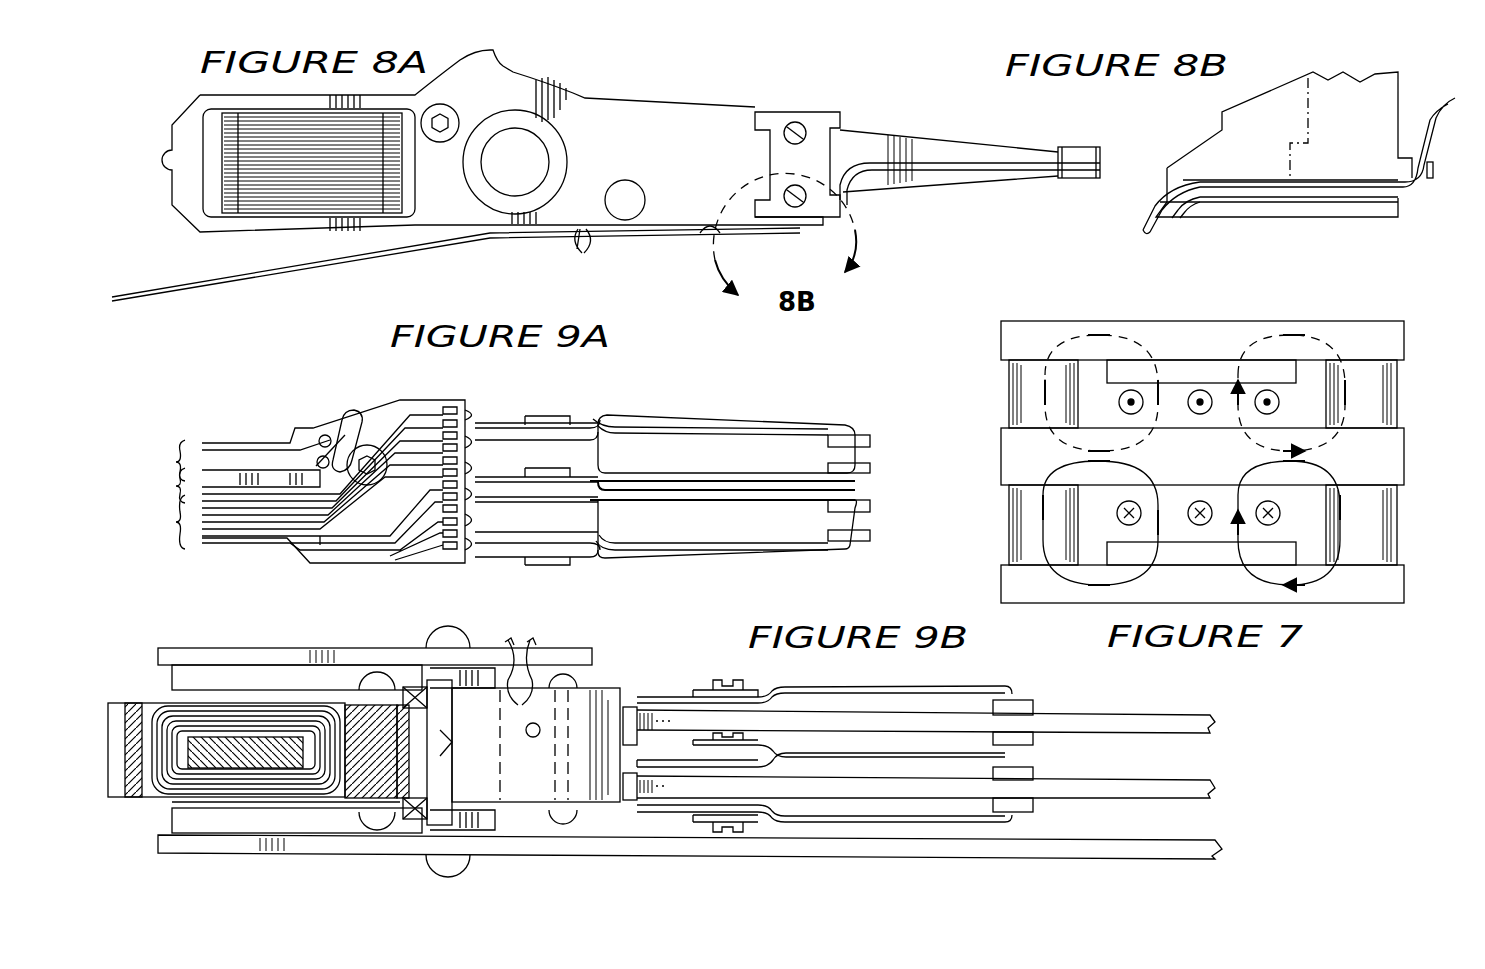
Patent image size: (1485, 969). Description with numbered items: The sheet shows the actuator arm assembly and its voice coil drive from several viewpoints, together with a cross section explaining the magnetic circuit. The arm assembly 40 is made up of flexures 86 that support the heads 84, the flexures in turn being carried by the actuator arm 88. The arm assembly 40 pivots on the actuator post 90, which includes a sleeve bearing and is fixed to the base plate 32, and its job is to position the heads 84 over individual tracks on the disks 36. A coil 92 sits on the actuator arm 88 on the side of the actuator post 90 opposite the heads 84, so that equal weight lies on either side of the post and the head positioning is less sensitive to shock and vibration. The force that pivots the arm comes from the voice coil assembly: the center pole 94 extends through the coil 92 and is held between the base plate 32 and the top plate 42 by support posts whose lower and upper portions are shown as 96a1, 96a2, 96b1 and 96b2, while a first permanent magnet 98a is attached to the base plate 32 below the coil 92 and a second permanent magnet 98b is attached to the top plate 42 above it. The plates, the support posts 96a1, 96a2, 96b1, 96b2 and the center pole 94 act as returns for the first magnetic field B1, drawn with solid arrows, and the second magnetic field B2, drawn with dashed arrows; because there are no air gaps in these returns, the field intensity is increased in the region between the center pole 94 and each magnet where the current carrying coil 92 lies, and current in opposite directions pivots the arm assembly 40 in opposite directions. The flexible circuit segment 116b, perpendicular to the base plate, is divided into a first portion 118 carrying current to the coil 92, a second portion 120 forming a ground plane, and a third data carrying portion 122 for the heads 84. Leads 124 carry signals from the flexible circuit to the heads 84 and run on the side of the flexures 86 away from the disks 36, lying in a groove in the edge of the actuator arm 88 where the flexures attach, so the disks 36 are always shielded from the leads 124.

In FIG. 7, the base plate 32 is at (1408, 585).
In FIG. 9B, the base plate 32 is at (665, 855).
In FIG. 9B, the disks 36 is at (1100, 733).
In FIG. 8A, the arm assembly 40 is at (695, 168).
In FIG. 9B, the arm assembly 40 is at (608, 680).
In FIG. 7, the top plate 42 is at (1408, 350).
In FIG. 9B, the top plate 42 is at (345, 650).
In FIG. 8A, the heads 84 is at (1068, 180).
In FIG. 9A, the heads 84 is at (870, 441).
In FIG. 9B, the heads 84 is at (1035, 708).
In FIG. 8A, the flexures 86 is at (920, 180).
In FIG. 9A, the flexures 86 is at (777, 424).
In FIG. 9B, the flexures 86 is at (1005, 690).
In FIG. 8A, the actuator arm 88 is at (660, 112).
In FIG. 8B, the actuator arm 88 is at (1390, 100).
In FIG. 9B, the actuator arm 88 is at (600, 716).
In FIG. 8A, the actuator post 90 is at (528, 152).
In FIG. 9B, the actuator post 90 is at (432, 868).
In FIG. 8A, the coil 92 is at (288, 192).
In FIG. 7, the coil 92 is at (1219, 459).
In FIG. 9B, the coil 92 is at (312, 790).
In FIG. 7, the center pole 94 is at (1408, 468).
In FIG. 9B, the center pole 94 is at (237, 760).
In FIG. 7, the lower portion of support post 96a1 is at (1024, 538).
In FIG. 7, the upper portion of support post 96a2 is at (1024, 396).
In FIG. 7, the lower portion of support post 96b1 is at (1380, 563).
In FIG. 7, the upper portion of support post 96b2 is at (1380, 418).
In FIG. 7, the first permanent magnet 98a is at (1162, 550).
In FIG. 9B, the first permanent magnet 98a is at (166, 830).
In FIG. 7, the second permanent magnet 98b is at (1310, 378).
In FIG. 9B, the second permanent magnet 98b is at (166, 678).
In FIG. 8A, the segment of flexible circuit assembly 116b is at (345, 268).
In FIG. 9A, the segment of flexible circuit assembly 116b is at (385, 412).
In FIG. 9A, the first portion 118 is at (226, 458).
In FIG. 9A, the second portion 120 is at (220, 485).
In FIG. 9A, the third portion 122 is at (281, 487).
In FIG. 8A, the leads 124 is at (962, 150).
In FIG. 8B, the leads 124 is at (1307, 195).
In FIG. 9A, the leads 124 is at (600, 428).
In FIG. 7, the first magnetic field B1 is at (1334, 568).
In FIG. 7, the second magnetic field B2 is at (1356, 340).